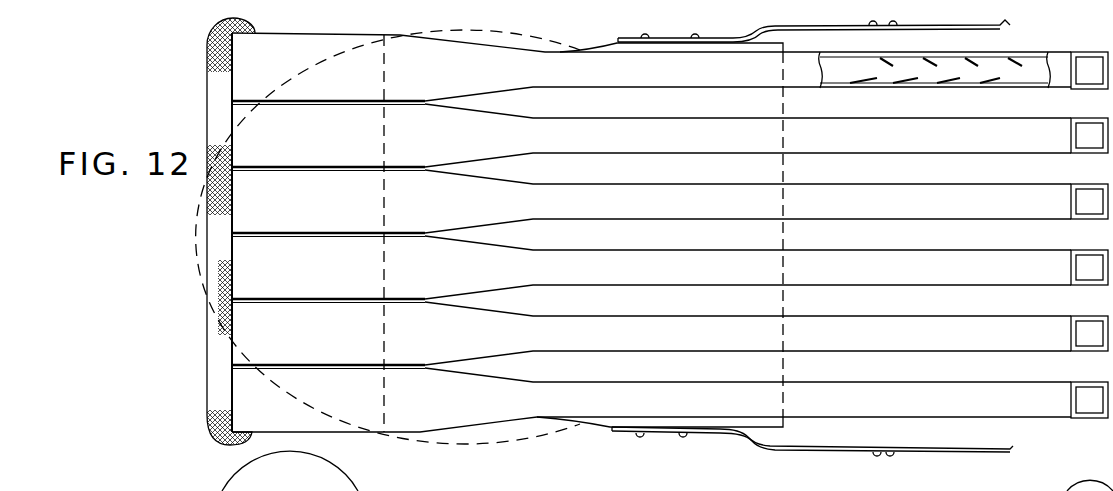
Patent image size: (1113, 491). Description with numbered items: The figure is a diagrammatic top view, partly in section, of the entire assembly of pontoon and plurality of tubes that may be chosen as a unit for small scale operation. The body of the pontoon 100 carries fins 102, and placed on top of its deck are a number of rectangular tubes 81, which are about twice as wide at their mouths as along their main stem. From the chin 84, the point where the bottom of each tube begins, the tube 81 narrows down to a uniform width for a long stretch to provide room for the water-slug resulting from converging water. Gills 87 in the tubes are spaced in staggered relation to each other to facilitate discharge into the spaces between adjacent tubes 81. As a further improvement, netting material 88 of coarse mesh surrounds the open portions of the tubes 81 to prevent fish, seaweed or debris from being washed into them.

The rectangular tubes 81 is at (697, 77).
The chin 84 is at (383, 257).
The gills 87 is at (907, 80).
The netting material 88 is at (207, 328).
The body of the pontoon 100 is at (503, 90).
The fins 102 is at (1011, 23).